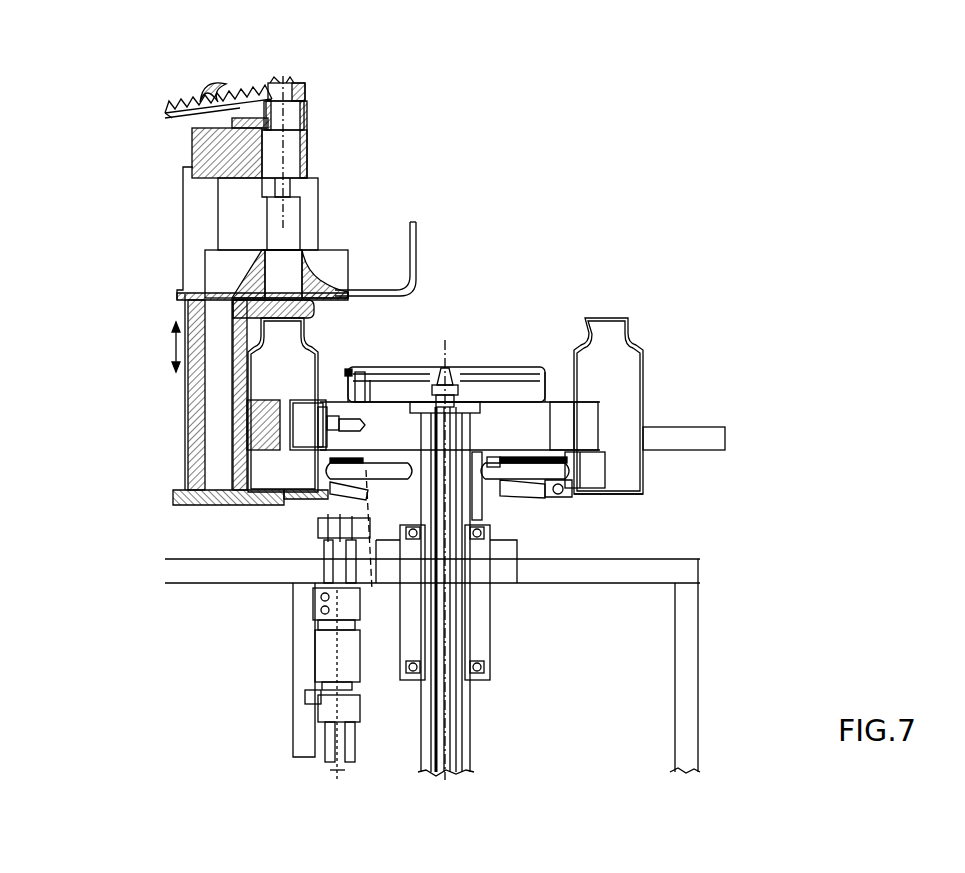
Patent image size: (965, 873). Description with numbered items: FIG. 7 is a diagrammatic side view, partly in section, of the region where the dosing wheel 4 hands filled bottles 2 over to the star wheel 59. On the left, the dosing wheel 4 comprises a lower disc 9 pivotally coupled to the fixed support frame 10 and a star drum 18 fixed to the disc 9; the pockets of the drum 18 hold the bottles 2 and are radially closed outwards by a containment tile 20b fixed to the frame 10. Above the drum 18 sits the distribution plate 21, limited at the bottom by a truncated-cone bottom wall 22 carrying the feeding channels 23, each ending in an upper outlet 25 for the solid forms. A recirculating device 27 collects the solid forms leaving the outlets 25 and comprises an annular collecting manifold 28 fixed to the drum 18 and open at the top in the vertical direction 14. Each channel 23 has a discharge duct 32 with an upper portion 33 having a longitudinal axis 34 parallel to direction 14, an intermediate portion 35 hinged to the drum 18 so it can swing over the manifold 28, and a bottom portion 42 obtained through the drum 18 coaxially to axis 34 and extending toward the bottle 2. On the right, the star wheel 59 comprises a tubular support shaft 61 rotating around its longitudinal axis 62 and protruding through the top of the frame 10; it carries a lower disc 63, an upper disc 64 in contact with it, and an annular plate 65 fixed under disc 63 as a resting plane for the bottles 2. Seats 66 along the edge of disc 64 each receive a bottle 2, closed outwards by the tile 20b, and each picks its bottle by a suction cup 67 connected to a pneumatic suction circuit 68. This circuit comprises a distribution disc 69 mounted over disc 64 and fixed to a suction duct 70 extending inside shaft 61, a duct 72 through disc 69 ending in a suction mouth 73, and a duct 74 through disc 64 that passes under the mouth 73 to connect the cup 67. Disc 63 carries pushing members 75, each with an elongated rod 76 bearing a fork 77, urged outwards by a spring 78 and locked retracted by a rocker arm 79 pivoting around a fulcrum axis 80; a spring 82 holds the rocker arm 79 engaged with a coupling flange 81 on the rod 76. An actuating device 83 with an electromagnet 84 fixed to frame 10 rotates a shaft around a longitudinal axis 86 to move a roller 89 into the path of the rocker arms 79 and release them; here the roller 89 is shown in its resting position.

The bottle 2 is at (312, 343).
The dosing wheel 4 is at (185, 512).
The lower disc 9 is at (185, 500).
The fixed support frame 10 is at (690, 724).
The direction 14 is at (162, 347).
The star drum 18 is at (200, 148).
The containment tile 20b is at (690, 432).
The distribution plate 21 is at (183, 114).
The bottom wall 22 is at (172, 104).
The feeding channel 23 is at (207, 82).
The upper outlet 25 is at (292, 80).
The recirculating device 27 is at (423, 242).
The annular collecting manifold 28 is at (416, 268).
The discharge duct 32 is at (320, 160).
The upper portion 33 is at (302, 140).
The longitudinal axis 34 is at (283, 78).
The intermediate portion 35 is at (300, 218).
The bottom portion 42 is at (300, 268).
The star wheel 59 is at (495, 290).
The tubular support shaft 61 is at (470, 762).
The longitudinal axis 62 is at (445, 350).
The lower disc 63 is at (548, 458).
The upper disc 64 is at (548, 405).
The annular plate 65 is at (605, 498).
The seat 66 is at (590, 410).
The suction cup 67 is at (320, 416).
The pneumatic suction circuit 68 is at (492, 362).
The distribution disc 69 is at (518, 370).
The suction duct 70 is at (450, 734).
The duct 72 is at (413, 392).
The suction mouth 73 is at (356, 392).
The duct 74 is at (352, 418).
The pushing member 75 is at (602, 462).
The elongated rod 76 is at (378, 480).
The fork 77 is at (598, 480).
The spring 78 is at (498, 482).
The rocker arm 79 is at (520, 498).
The fulcrum axis 80 is at (379, 541).
The coupling flange 81 is at (490, 456).
The spring 82 is at (335, 488).
The actuating device 83 is at (308, 640).
The electromagnet 84 is at (322, 668).
The longitudinal axis 86 is at (330, 766).
The roller 89 is at (318, 530).